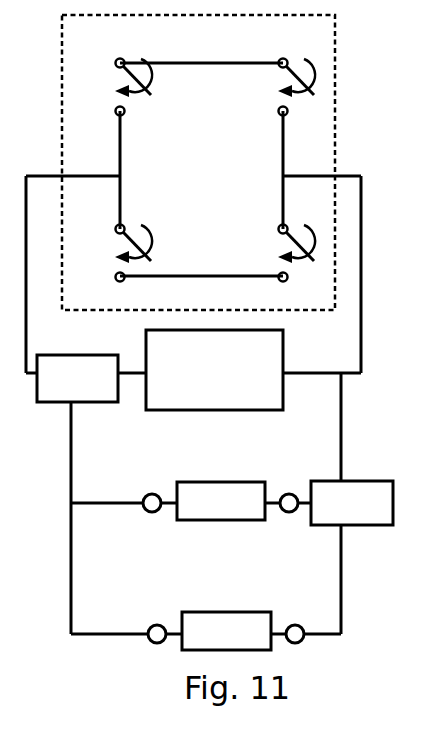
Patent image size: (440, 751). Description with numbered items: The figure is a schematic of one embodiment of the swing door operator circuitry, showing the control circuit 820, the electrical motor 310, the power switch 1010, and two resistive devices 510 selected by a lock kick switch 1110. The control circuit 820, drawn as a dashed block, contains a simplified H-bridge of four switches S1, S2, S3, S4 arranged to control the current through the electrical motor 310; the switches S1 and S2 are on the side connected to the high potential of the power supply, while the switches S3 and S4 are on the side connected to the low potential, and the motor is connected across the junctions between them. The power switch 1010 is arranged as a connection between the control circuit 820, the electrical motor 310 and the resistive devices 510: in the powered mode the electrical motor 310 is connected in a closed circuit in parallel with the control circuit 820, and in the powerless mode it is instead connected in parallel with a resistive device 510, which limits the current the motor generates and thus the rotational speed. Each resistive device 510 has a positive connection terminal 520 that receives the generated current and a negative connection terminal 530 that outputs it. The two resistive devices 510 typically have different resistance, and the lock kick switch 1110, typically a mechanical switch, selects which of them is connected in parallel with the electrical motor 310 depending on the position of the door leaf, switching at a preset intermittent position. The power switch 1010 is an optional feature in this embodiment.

The control circuit 820 is at (198, 162).
The electrical motor 310 is at (237, 381).
The power switch 1010 is at (77, 378).
The lock kick switch 1110 is at (352, 503).
The resistive device 510 is at (238, 510).
The positive connection terminal 520 is at (146, 495).
The negative connection terminal 530 is at (290, 493).
The switch S1 is at (117, 87).
The switch S2 is at (273, 87).
The switch S3 is at (117, 253).
The switch S4 is at (273, 253).